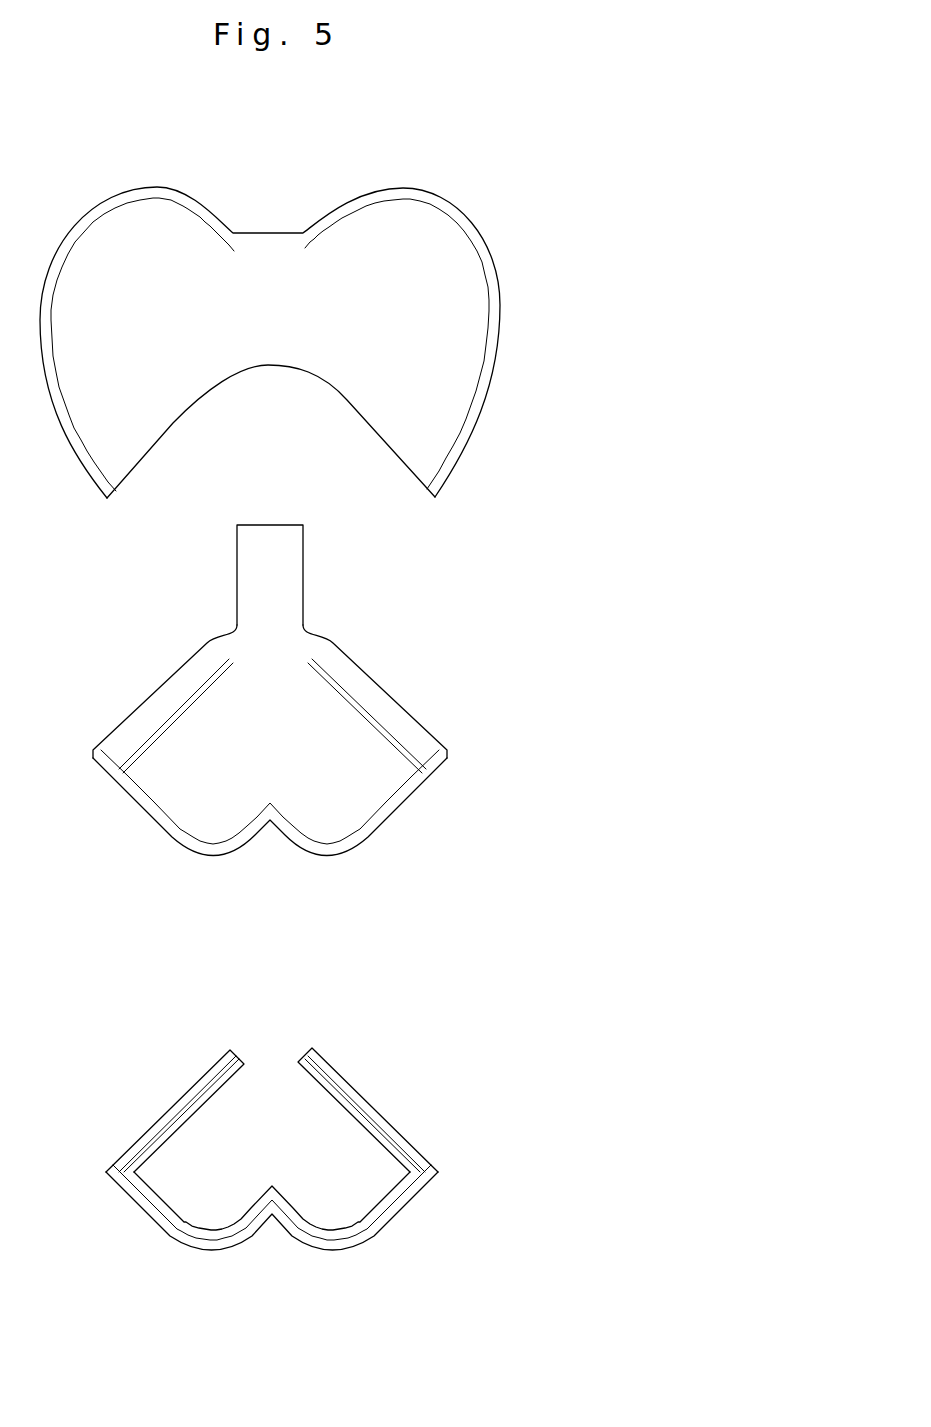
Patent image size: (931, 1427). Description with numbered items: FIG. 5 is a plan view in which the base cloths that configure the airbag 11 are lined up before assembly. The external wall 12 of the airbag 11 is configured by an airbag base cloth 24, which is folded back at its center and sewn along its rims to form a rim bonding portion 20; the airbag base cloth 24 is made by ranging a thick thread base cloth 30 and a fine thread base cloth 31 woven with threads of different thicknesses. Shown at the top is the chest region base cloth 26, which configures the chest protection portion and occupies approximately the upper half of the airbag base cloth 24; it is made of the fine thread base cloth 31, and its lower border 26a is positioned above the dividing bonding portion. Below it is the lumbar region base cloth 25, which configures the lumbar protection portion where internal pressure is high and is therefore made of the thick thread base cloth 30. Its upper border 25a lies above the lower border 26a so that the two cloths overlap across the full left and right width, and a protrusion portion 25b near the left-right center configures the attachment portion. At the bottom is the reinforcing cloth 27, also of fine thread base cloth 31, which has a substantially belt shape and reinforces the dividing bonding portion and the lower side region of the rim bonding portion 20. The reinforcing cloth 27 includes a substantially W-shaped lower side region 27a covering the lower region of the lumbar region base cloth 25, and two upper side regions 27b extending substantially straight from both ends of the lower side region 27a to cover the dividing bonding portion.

The airbag 11 is at (523, 233).
The external wall 12 is at (356, 342).
The airbag base cloth 24 is at (356, 342).
The chest region base cloth 26 is at (356, 342).
The fine thread base cloth 31 is at (490, 417).
The lower border 26a is at (347, 400).
The rim bonding portion 20 is at (463, 443).
The lumbar region base cloth 25 is at (326, 726).
The thick thread base cloth 30 is at (385, 655).
The upper border 25a is at (393, 690).
The protrusion portion 25b is at (287, 567).
The reinforcing cloth 27 is at (397, 1077).
The lower side region 27a is at (290, 1198).
The upper side regions 27b is at (197, 1070).